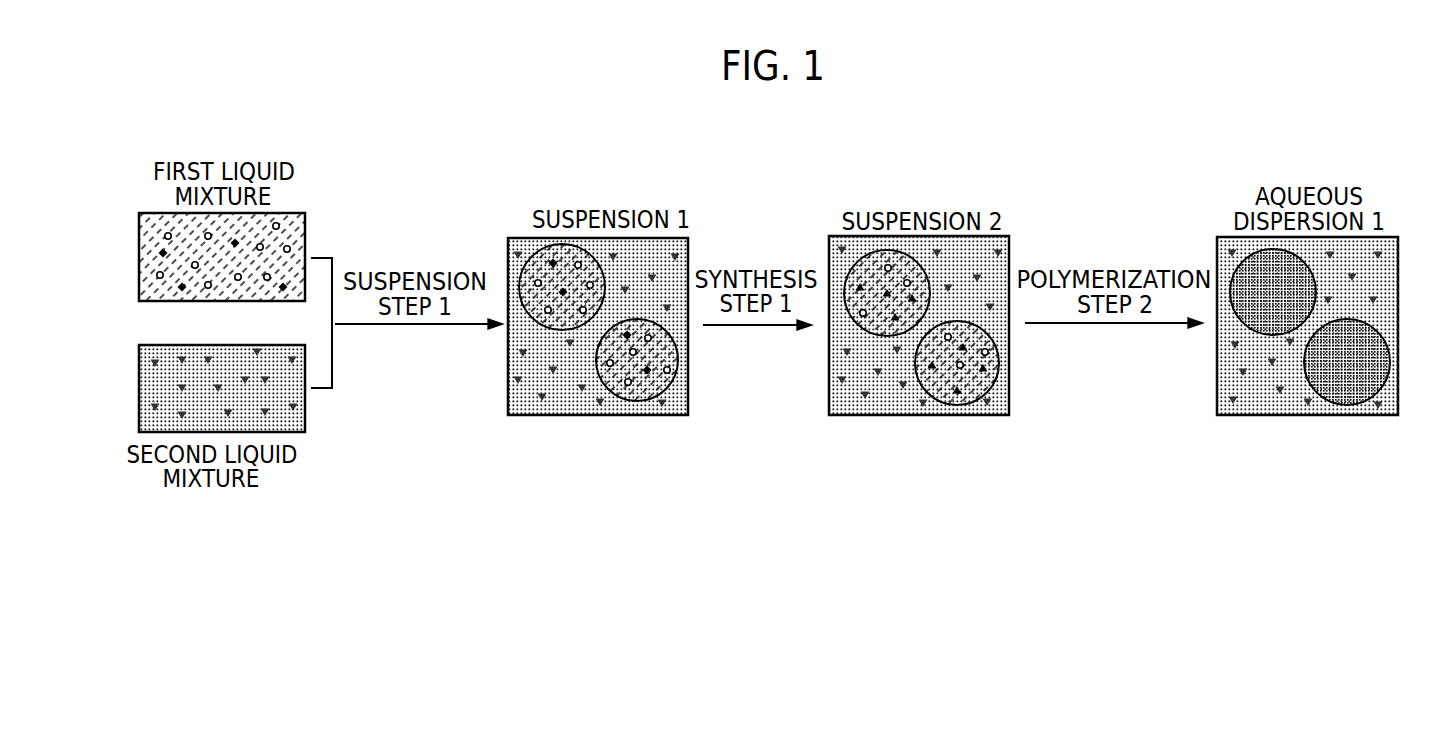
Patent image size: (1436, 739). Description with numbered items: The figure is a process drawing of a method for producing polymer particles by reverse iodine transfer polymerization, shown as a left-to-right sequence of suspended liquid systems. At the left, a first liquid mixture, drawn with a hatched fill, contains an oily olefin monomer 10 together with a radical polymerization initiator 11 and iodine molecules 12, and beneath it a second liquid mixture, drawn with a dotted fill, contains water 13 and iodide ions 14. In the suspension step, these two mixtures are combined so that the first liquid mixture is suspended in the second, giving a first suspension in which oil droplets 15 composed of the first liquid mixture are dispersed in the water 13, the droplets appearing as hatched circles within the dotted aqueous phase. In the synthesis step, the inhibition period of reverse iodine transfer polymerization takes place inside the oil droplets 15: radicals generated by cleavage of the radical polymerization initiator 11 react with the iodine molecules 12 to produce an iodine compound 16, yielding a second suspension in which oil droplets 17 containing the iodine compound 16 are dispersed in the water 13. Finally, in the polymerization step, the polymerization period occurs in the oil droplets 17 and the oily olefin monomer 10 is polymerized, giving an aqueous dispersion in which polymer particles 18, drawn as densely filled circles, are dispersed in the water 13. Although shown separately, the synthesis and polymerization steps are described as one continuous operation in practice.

The oily olefin monomer 10 is at (150, 256).
The radical polymerization initiator 11 is at (291, 249).
The iodine molecules 12 is at (238, 242).
The water 13 is at (150, 389).
The iodide ions 14 is at (268, 414).
The oil droplets 15 is at (673, 318).
The iodine compound 16 is at (860, 285).
The oil droplets 17 is at (995, 318).
The polymer particles 18 is at (1382, 318).